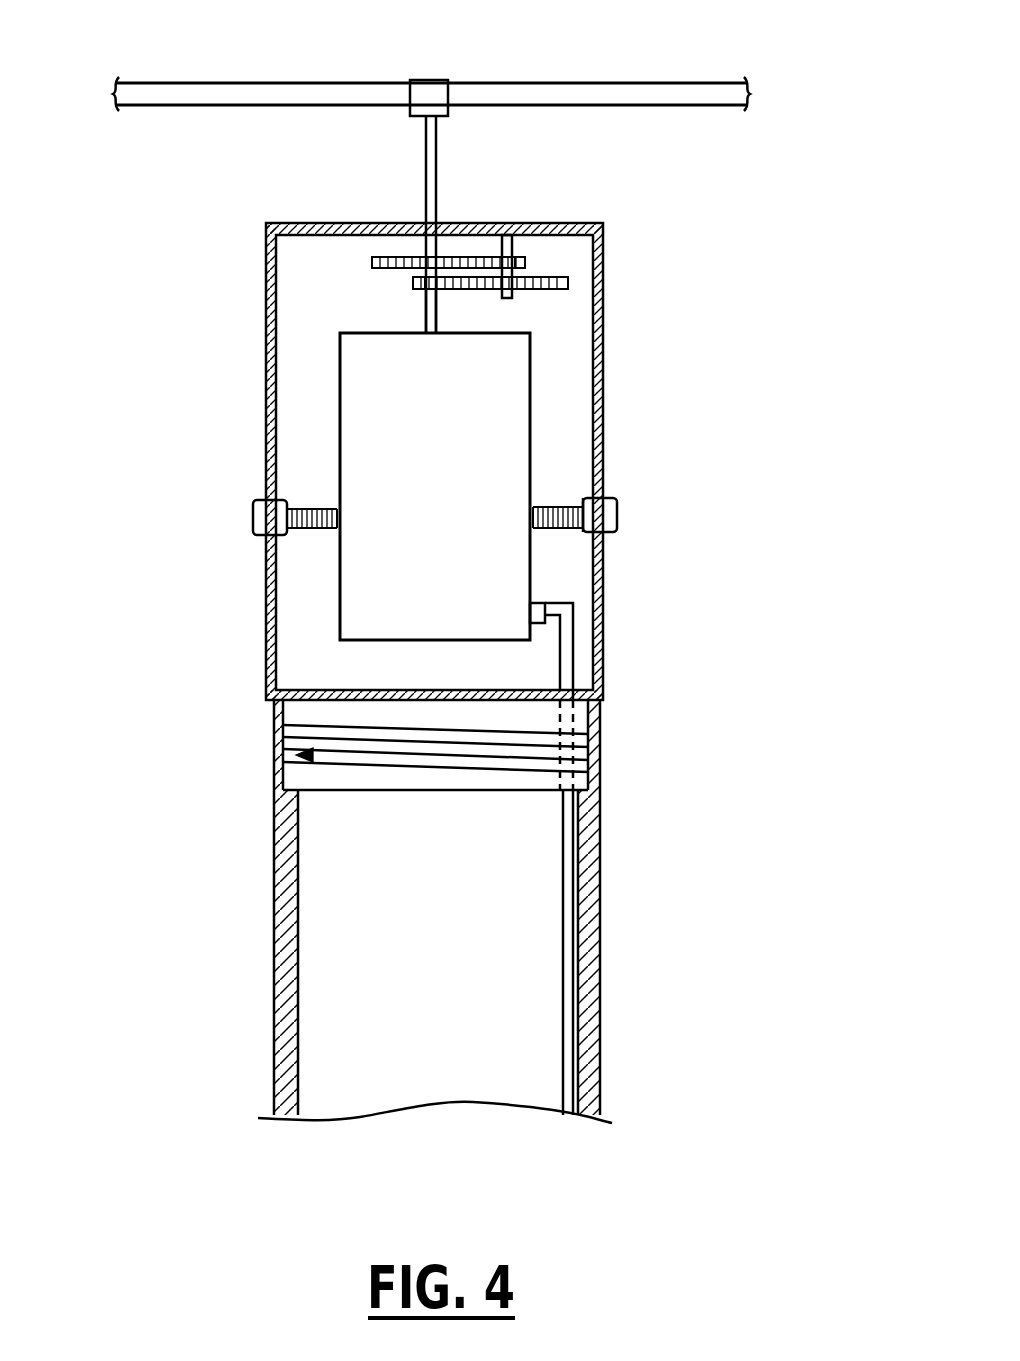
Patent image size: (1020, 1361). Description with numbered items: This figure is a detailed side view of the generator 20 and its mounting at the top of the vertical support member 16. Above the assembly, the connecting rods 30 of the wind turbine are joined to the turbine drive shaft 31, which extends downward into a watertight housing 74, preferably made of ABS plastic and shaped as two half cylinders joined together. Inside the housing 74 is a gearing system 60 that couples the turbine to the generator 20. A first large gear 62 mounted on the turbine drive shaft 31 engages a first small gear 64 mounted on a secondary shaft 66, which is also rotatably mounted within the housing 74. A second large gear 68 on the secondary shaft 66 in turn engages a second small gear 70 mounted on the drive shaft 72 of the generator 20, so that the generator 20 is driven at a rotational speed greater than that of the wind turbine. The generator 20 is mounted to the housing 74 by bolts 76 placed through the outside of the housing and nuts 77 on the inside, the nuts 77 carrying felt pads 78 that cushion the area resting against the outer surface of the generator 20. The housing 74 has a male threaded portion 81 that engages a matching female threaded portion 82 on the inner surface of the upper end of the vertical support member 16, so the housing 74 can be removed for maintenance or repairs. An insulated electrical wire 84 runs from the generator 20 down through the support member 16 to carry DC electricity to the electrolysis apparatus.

The vertical support member 16 is at (600, 885).
The generator 20 is at (353, 417).
The connecting rods 30 is at (620, 83).
The turbine drive shaft 31 is at (421, 143).
The gearing system 60 is at (468, 237).
The first large gear 62 is at (402, 257).
The first small gear 64 is at (530, 263).
The secondary shaft 66 is at (500, 250).
The second large gear 68 is at (545, 290).
The second small gear 70 is at (413, 284).
The drive shaft 72 is at (430, 313).
The watertight housing 74 is at (268, 612).
The bolts 76 is at (618, 524).
The nuts 77 is at (583, 498).
The felt pads 78 is at (533, 510).
The male threaded portion 81 is at (533, 755).
The female threaded portion 82 is at (312, 756).
The insulated electrical wire 84 is at (573, 648).